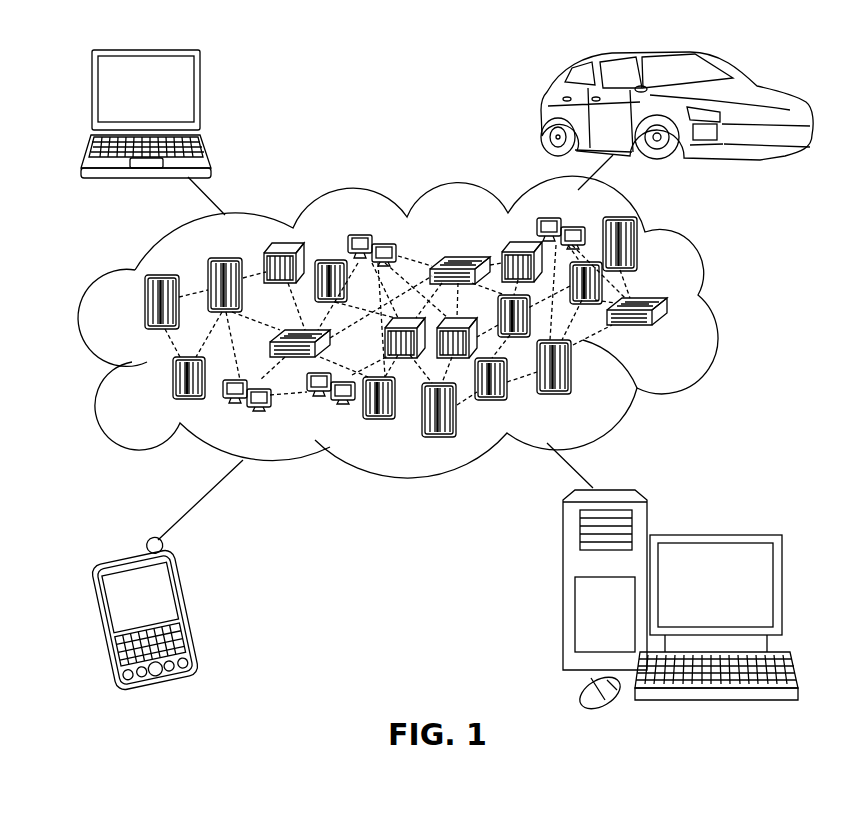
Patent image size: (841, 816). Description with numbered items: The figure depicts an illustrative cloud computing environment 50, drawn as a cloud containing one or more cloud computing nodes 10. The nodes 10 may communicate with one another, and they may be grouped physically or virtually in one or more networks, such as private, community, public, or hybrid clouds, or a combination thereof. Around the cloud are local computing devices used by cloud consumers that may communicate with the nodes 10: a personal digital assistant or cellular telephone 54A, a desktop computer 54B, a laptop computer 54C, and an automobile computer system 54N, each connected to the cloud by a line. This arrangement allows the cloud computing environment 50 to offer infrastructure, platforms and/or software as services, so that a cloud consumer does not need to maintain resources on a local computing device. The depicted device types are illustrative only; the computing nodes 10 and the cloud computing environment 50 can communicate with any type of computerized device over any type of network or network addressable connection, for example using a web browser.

The cloud computing nodes 10 is at (666, 332).
The cloud computing environment 50 is at (712, 310).
The personal digital assistant (PDA) or cellular telephone 54A is at (192, 607).
The desktop computer 54B is at (712, 533).
The laptop computer 54C is at (202, 97).
The automobile computer system 54N is at (542, 112).